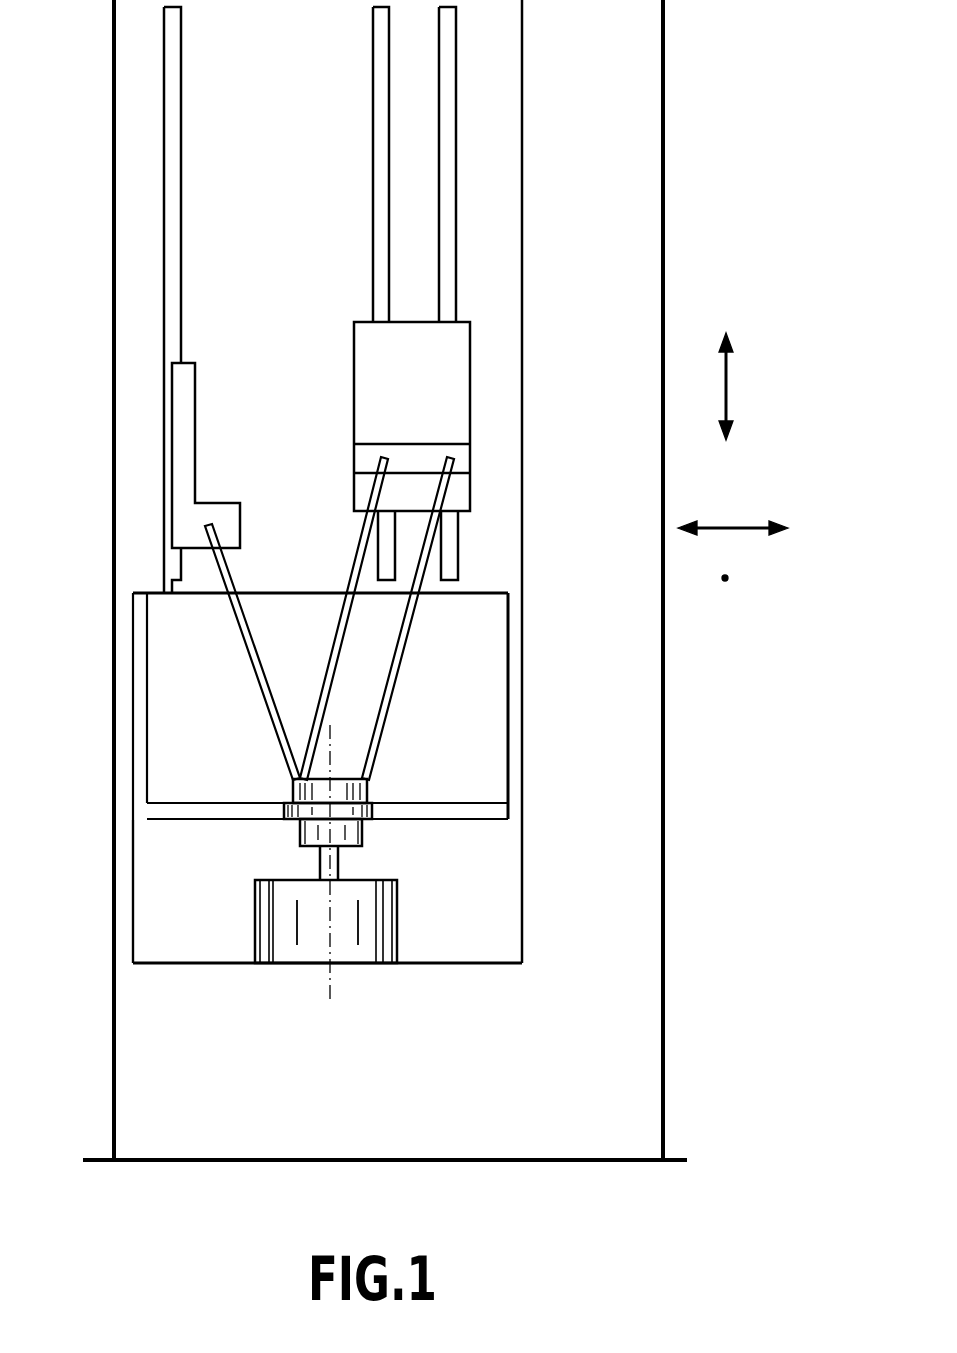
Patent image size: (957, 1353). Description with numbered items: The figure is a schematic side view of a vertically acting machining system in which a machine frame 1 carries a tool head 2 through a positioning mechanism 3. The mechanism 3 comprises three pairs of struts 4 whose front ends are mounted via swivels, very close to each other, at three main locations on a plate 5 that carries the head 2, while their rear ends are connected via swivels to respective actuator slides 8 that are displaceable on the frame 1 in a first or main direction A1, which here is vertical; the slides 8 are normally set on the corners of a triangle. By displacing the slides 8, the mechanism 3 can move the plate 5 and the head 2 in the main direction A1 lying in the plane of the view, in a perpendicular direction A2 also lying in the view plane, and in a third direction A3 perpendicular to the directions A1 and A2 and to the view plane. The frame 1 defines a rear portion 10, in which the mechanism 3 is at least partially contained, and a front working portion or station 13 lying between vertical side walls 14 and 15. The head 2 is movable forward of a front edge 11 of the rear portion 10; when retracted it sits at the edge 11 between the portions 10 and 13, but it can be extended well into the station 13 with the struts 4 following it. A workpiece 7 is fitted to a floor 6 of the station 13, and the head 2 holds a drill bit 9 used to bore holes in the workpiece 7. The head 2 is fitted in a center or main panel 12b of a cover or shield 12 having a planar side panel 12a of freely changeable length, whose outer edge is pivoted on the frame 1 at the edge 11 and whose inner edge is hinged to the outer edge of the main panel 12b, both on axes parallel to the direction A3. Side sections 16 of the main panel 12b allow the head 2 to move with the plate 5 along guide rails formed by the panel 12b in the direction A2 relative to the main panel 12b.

The machine frame 1 is at (640, 60).
The tool head 2 is at (290, 836).
The positioning mechanism 3 is at (118, 152).
The struts 4 is at (257, 692).
The plate 5 is at (368, 793).
The floor 6 is at (345, 958).
The workpiece 7 is at (268, 922).
The actuator slides 8 is at (367, 393).
The drill bit 9 is at (338, 867).
The rear portion 10 is at (127, 514).
The front edge 11 is at (133, 597).
The cover or shield 12 is at (323, 789).
The side panel 12a is at (493, 697).
The main panel 12b is at (483, 819).
The working station 13 is at (140, 651).
The side wall 14 is at (123, 826).
The side wall 15 is at (523, 658).
The side sections 16 is at (462, 810).
The main direction A1 is at (727, 393).
The perpendicular direction A2 is at (726, 528).
The third direction A3 is at (725, 578).